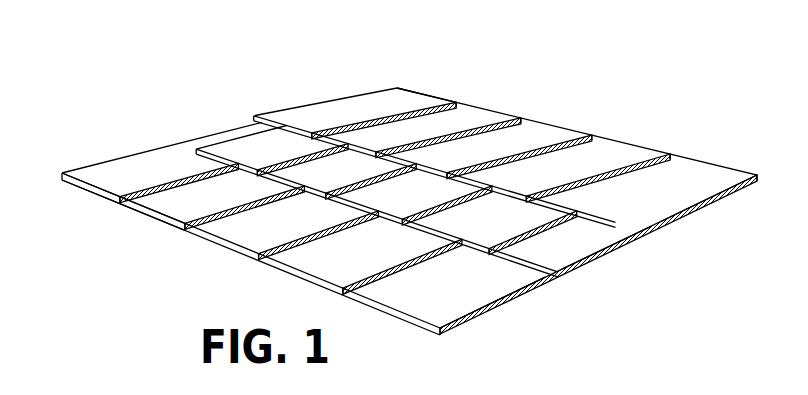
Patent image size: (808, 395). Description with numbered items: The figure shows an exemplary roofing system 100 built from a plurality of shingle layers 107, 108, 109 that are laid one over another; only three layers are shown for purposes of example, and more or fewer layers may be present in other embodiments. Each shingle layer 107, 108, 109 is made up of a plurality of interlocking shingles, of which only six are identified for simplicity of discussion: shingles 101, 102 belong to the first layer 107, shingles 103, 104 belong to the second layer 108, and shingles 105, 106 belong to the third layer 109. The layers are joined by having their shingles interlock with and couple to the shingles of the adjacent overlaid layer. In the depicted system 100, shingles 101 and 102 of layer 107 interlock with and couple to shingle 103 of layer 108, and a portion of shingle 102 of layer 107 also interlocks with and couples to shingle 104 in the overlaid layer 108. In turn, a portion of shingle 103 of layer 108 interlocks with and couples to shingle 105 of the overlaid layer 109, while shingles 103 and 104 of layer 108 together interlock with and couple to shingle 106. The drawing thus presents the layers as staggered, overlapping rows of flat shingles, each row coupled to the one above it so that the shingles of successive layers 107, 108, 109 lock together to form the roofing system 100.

The roofing system 100 is at (247, 78).
The shingle 101 is at (128, 170).
The shingle 102 is at (168, 195).
The shingle 103 is at (248, 150).
The shingle 104 is at (330, 160).
The shingle 105 is at (377, 100).
The shingle 106 is at (465, 117).
The shingle layer 107 is at (545, 298).
The shingle layer 108 is at (640, 247).
The shingle layer 109 is at (760, 177).